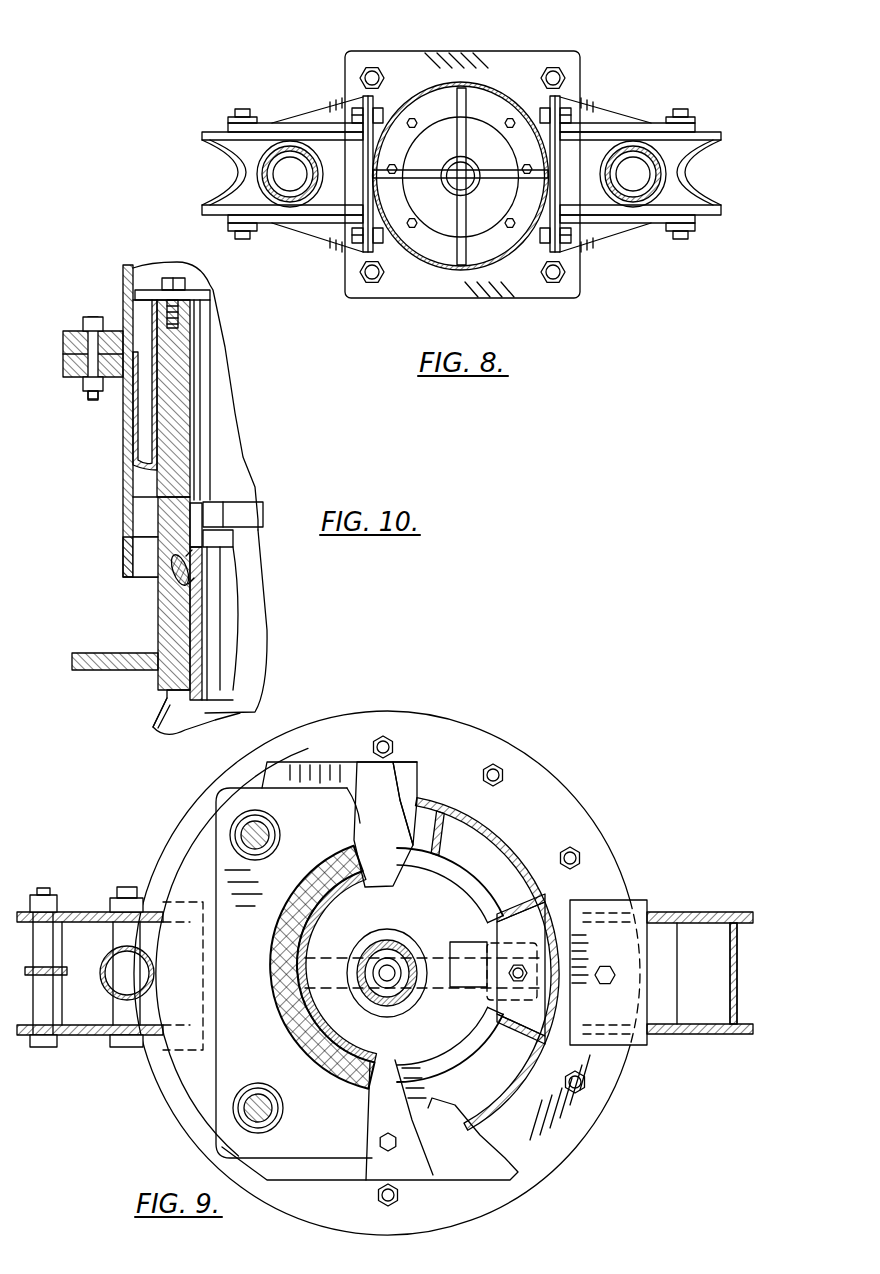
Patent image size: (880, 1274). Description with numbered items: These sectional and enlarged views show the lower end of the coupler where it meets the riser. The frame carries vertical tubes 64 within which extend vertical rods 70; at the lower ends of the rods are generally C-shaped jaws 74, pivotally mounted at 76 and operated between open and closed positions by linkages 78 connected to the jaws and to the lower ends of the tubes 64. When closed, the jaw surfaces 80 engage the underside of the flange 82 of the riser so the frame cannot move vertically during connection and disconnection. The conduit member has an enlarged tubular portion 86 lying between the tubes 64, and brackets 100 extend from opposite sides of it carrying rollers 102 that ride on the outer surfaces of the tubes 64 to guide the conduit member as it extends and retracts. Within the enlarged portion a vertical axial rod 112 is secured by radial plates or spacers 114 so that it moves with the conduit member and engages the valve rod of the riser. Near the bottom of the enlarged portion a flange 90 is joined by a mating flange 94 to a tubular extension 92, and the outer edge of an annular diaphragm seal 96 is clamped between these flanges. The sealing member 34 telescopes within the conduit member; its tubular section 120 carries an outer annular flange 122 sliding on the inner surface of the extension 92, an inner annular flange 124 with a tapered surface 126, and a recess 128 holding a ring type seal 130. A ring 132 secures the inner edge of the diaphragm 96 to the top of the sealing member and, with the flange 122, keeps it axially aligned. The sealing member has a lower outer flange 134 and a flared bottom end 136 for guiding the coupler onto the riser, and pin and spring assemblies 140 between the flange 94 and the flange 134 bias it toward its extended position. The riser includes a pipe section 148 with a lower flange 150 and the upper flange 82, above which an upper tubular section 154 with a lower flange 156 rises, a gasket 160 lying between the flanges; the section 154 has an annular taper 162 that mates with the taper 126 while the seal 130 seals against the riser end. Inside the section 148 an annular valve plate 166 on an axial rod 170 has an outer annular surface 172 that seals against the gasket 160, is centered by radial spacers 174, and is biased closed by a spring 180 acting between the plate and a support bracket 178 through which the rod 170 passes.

In FIG. 10, the sealing member 34 is at (146, 626).
In FIG. 8, the vertical tubes 64 is at (262, 145).
In FIG. 8, the vertical rods 70 is at (300, 205).
In FIG. 9, the vertical rods 70 is at (105, 975).
In FIG. 9, the C-shaped jaws 74 is at (695, 1036).
In FIG. 9, the pivot 76 is at (122, 1046).
In FIG. 9, the linkages 78 is at (30, 970).
In FIG. 9, the surfaces 80 is at (638, 898).
In FIG. 9, the flange 82 is at (413, 760).
In FIG. 10, the enlarged tubular portion 86 is at (127, 268).
In FIG. 10, the flange 90 is at (65, 334).
In FIG. 10, the tubular extension 92 is at (125, 480).
In FIG. 8, the mating flange 94 is at (390, 292).
In FIG. 10, the mating flange 94 is at (70, 382).
In FIG. 10, the annular diaphragm seal 96 is at (147, 432).
In FIG. 8, the brackets 100 is at (305, 122).
In FIG. 8, the rollers 102 is at (232, 165).
In FIG. 8, the vertical axial rod 112 is at (470, 160).
In FIG. 9, the vertical axial rod 112 is at (380, 945).
In FIG. 8, the radial plates or spacers 114 is at (458, 92).
In FIG. 10, the tubular section 120 is at (183, 425).
In FIG. 9, the tubular section 120 is at (335, 1088).
In FIG. 10, the outer annular flange 122 is at (130, 528).
In FIG. 10, the inner annular flange 124 is at (205, 490).
In FIG. 10, the tapered surface 126 is at (240, 530).
In FIG. 10, the recess 128 is at (172, 565).
In FIG. 10, the ring type seal 130 is at (172, 580).
In FIG. 8, the ring 132 is at (500, 245).
In FIG. 10, the ring 132 is at (150, 266).
In FIG. 10, the lower outer flange 134 is at (88, 672).
In FIG. 9, the lower outer flange 134 is at (258, 798).
In FIG. 10, the flared bottom end 136 is at (160, 722).
In FIG. 9, the pin and spring assemblies 140 is at (230, 835).
In FIG. 9, the pipe section 148 is at (523, 850).
In FIG. 9, the lower flange 150 is at (596, 1112).
In FIG. 10, the upper tubular section 154 is at (228, 655).
In FIG. 9, the lower flange 156 is at (293, 766).
In FIG. 9, the gasket or seal 160 is at (408, 760).
In FIG. 10, the annular taper 162 is at (222, 515).
In FIG. 9, the annular valve plate 166 is at (445, 905).
In FIG. 9, the axial rod 170 is at (400, 945).
In FIG. 9, the outer annular surface 172 is at (450, 883).
In FIG. 9, the radial spacers 174 is at (460, 815).
In FIG. 9, the support bracket 178 is at (510, 1025).
In FIG. 9, the spring 180 is at (405, 1020).